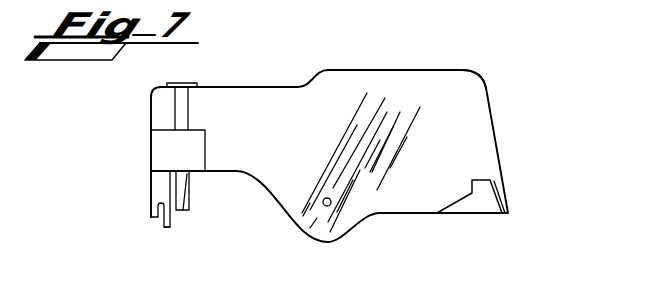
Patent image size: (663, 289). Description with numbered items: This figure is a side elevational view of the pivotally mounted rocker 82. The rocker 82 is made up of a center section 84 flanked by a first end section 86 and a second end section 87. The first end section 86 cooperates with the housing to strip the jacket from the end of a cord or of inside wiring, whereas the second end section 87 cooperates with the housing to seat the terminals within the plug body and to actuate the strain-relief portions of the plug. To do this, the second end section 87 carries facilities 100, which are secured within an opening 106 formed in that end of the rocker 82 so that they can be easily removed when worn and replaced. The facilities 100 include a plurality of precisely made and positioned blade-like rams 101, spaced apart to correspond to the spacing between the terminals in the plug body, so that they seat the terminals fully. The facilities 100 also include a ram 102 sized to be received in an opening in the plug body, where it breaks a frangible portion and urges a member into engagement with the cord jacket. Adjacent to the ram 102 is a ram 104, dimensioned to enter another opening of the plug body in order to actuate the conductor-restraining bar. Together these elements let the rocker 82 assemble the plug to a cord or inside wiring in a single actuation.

The rocker 82 is at (497, 131).
The center section 84 is at (332, 97).
The first end section 86 is at (482, 83).
The second end section 87 is at (235, 100).
The facilities 100 is at (162, 180).
The blade-like rams 101 is at (189, 200).
The ram 102 is at (158, 215).
The ram 104 is at (171, 227).
The opening 106 is at (153, 158).